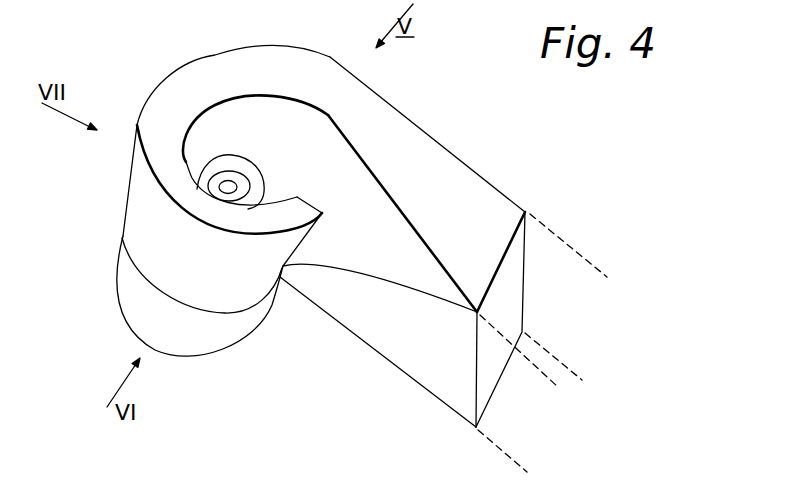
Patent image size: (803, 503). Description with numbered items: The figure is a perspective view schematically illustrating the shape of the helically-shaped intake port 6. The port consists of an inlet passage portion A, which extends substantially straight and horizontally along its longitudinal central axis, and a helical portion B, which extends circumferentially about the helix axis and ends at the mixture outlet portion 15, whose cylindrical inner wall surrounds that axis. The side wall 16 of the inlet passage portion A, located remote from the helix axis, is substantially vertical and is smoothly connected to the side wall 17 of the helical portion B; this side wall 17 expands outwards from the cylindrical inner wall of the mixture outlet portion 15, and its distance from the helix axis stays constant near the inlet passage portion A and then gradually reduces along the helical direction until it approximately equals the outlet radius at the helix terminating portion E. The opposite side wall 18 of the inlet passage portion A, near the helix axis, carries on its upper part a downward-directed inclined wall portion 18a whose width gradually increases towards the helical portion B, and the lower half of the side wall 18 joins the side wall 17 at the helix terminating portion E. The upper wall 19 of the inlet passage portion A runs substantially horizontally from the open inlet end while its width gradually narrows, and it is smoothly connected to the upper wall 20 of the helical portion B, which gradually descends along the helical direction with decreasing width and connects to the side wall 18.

The helically-shaped intake port 6 is at (493, 162).
The mixture outlet portion 15 is at (206, 334).
The side wall of the inlet passage portion 16 is at (488, 222).
The side wall of the helical portion 17 is at (140, 213).
The side wall of the inlet passage portion 18 is at (386, 360).
The inclined wall portion 18a is at (366, 266).
The upper wall of the inlet passage portion 19 is at (460, 185).
The upper wall of the helical portion 20 is at (153, 133).
The inlet passage portion A is at (450, 142).
The helical portion B is at (165, 68).
The helix terminating portion E is at (302, 237).